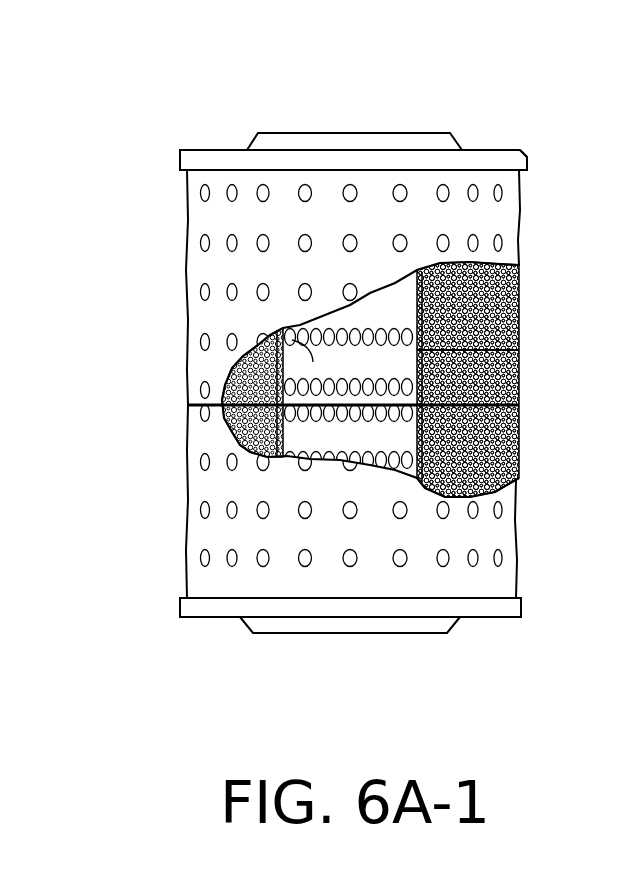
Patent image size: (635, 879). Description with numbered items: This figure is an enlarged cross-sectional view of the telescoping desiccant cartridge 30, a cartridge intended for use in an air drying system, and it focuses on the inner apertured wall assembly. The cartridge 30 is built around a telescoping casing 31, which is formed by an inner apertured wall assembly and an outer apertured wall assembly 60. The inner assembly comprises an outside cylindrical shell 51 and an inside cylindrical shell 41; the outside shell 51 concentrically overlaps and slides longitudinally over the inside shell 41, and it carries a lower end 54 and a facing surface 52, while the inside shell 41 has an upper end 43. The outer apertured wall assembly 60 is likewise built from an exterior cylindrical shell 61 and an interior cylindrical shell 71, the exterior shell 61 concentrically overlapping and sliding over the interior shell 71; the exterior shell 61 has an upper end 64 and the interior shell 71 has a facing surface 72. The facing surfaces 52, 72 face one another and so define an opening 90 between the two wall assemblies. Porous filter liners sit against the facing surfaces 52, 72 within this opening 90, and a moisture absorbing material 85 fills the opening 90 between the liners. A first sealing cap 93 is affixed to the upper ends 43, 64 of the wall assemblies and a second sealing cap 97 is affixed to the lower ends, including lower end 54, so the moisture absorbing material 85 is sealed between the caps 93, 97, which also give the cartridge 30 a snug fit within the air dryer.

The telescoping desiccant cartridge 30 is at (210, 115).
The telescoping casing 31 is at (190, 217).
The inside cylindrical shell 41 is at (386, 276).
The upper end 43 is at (275, 168).
The outside cylindrical shell 51 is at (293, 462).
The facing surface 52 is at (517, 292).
The lower end 54 is at (193, 600).
The outer apertured wall assembly 60 is at (188, 510).
The exterior cylindrical shell 61 is at (495, 535).
The upper end 64 is at (512, 153).
The interior cylindrical shell 71 is at (505, 364).
The facing surface 72 is at (517, 330).
The moisture absorbing material 85 is at (515, 393).
The opening 90 is at (487, 434).
The sealing cap 93 is at (408, 157).
The sealing cap 97 is at (398, 608).